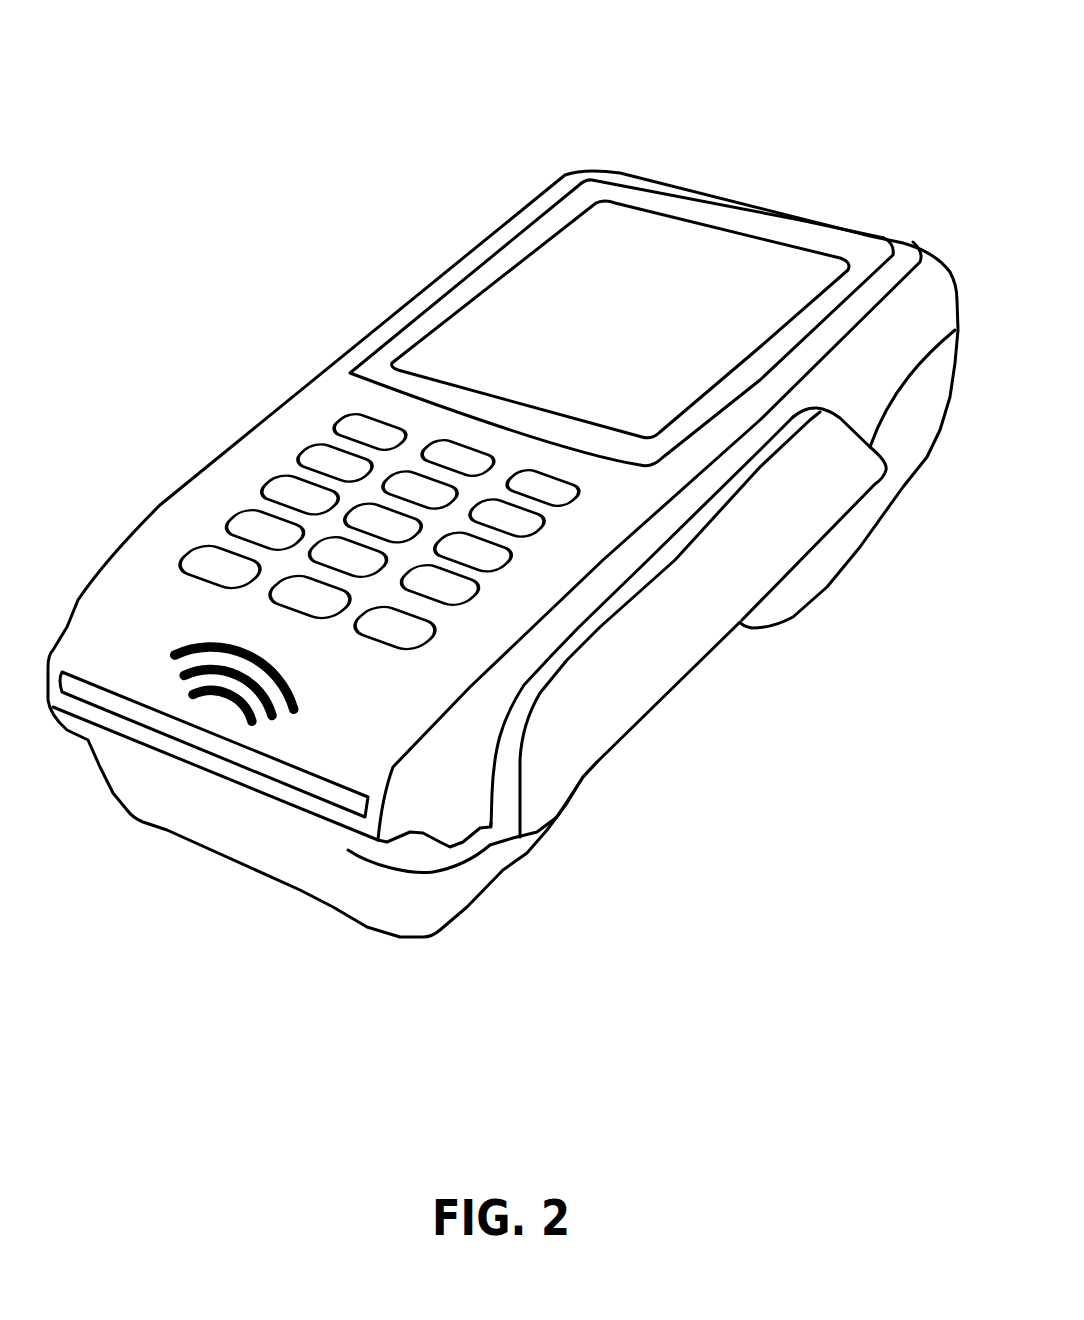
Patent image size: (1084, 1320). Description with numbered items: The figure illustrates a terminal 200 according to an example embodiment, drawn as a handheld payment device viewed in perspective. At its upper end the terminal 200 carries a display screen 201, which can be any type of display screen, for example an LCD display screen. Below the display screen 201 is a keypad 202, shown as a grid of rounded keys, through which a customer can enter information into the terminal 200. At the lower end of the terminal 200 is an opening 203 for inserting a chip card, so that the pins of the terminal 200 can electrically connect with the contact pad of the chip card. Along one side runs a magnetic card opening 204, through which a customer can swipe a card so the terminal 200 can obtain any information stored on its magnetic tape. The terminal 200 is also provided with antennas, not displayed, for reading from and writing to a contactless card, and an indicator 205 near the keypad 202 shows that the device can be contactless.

The terminal 200 is at (730, 134).
The display screen 201 is at (617, 243).
The keypad 202 is at (330, 393).
The opening 203 is at (212, 803).
The magnetic card opening 204 is at (505, 820).
The indicator 205 is at (162, 623).